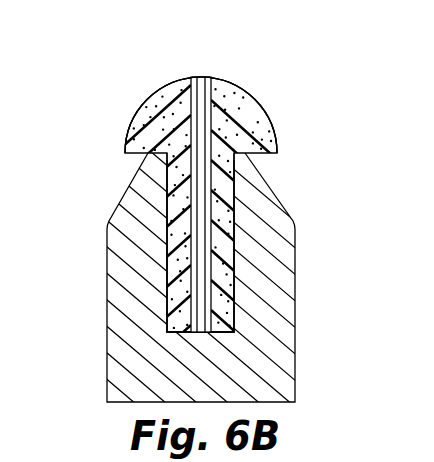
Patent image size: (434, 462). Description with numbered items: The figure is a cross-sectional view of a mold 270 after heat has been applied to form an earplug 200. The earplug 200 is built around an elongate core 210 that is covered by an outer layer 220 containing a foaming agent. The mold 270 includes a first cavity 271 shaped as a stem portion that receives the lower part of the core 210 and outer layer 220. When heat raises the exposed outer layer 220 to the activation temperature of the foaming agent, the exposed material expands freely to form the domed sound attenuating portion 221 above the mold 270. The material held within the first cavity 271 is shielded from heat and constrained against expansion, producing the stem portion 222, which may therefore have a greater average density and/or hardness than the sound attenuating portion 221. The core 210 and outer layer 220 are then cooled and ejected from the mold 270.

The earplug 200 is at (255, 83).
The elongate core 210 is at (198, 80).
The outer layer 220 is at (150, 95).
The sound attenuating portion 221 is at (145, 137).
The stem portion 222 is at (173, 252).
The mold 270 is at (287, 345).
The first cavity 271 is at (215, 255).